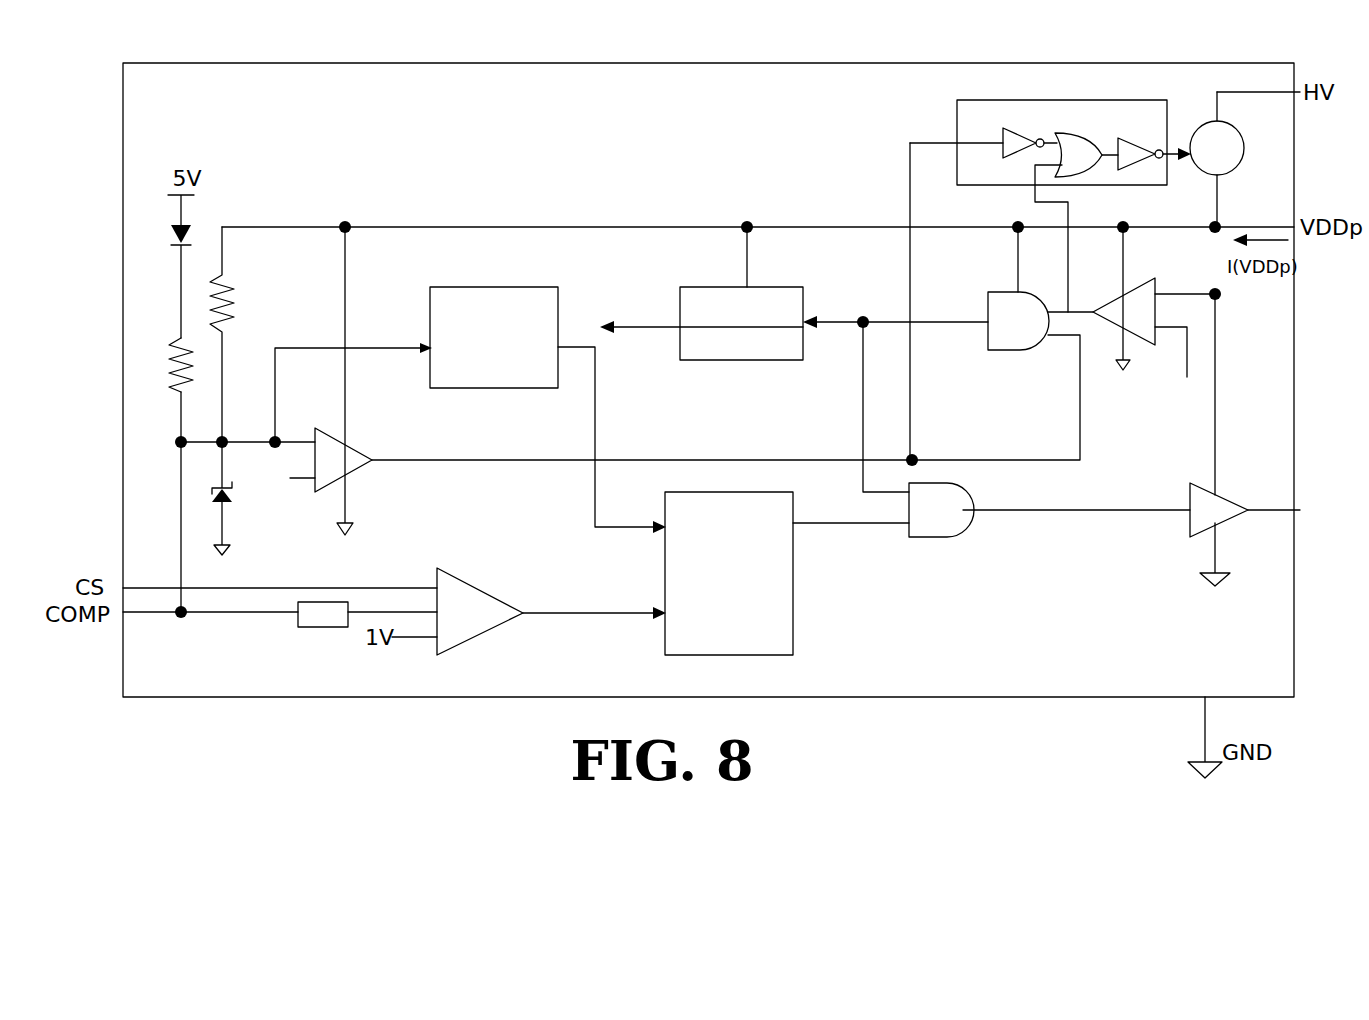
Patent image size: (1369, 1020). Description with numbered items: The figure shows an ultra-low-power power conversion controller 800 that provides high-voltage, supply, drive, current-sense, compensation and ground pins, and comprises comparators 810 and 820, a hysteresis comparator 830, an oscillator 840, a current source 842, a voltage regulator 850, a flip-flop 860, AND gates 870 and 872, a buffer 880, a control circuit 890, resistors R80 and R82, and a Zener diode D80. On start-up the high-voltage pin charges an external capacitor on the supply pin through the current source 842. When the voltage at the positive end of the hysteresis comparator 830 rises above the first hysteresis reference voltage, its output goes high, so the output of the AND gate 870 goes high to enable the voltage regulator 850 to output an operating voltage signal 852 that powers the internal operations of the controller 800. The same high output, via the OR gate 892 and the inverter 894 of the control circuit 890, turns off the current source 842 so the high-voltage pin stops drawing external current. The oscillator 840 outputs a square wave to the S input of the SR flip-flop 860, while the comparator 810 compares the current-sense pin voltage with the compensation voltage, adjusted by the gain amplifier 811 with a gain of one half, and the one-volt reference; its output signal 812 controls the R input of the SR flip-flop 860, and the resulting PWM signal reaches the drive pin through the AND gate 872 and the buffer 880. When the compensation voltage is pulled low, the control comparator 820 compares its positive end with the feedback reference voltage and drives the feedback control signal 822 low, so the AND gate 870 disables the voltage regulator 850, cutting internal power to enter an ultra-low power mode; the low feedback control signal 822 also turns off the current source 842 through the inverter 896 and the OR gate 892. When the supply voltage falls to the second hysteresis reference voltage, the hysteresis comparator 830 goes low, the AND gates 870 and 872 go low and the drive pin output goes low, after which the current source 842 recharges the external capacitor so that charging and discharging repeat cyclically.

The ultra-low-power power conversion controller 800 is at (1193, 45).
The comparator 810 is at (489, 637).
The gain amplifier 811 is at (316, 628).
The reset signal line 812 is at (573, 605).
The control comparator 820 is at (367, 474).
The feedback control signal 822 is at (659, 458).
The hysteresis comparator 830 is at (1136, 280).
The oscillator 840 is at (463, 286).
The current source 842 is at (1231, 168).
The voltage regulator 850 is at (703, 360).
The operating voltage signal 852 is at (657, 323).
The SR flip-flop 860 is at (796, 614).
The AND gate 870 is at (997, 296).
The AND gate 872 is at (961, 492).
The buffer 880 is at (1231, 521).
The control circuit 890 is at (1051, 100).
The OR gate 892 is at (1063, 136).
The inverter 894 is at (1124, 147).
The inverter 896 is at (1018, 136).
The resistor R80 is at (160, 365).
The resistor R82 is at (246, 334).
The Zener diode D80 is at (245, 498).